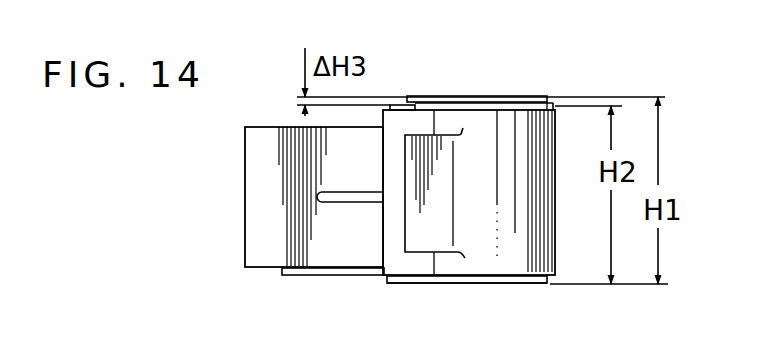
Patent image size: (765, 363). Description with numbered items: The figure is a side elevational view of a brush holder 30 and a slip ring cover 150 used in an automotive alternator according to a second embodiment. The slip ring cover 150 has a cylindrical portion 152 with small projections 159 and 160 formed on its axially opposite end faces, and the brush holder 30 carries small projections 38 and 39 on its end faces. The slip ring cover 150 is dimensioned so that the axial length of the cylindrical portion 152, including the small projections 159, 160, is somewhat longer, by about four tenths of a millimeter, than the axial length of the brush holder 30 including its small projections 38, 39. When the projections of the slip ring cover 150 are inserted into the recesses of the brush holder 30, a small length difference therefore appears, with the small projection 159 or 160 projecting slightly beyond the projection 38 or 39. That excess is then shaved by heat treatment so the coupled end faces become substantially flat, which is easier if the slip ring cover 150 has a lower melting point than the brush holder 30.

The brush holder 30 is at (247, 220).
The small projection 38 is at (396, 104).
The small projection 39 is at (403, 283).
The slip ring cover 150 is at (551, 253).
The cylindrical portion 152 is at (480, 271).
The small projection 159 is at (497, 96).
The small projection 160 is at (512, 285).